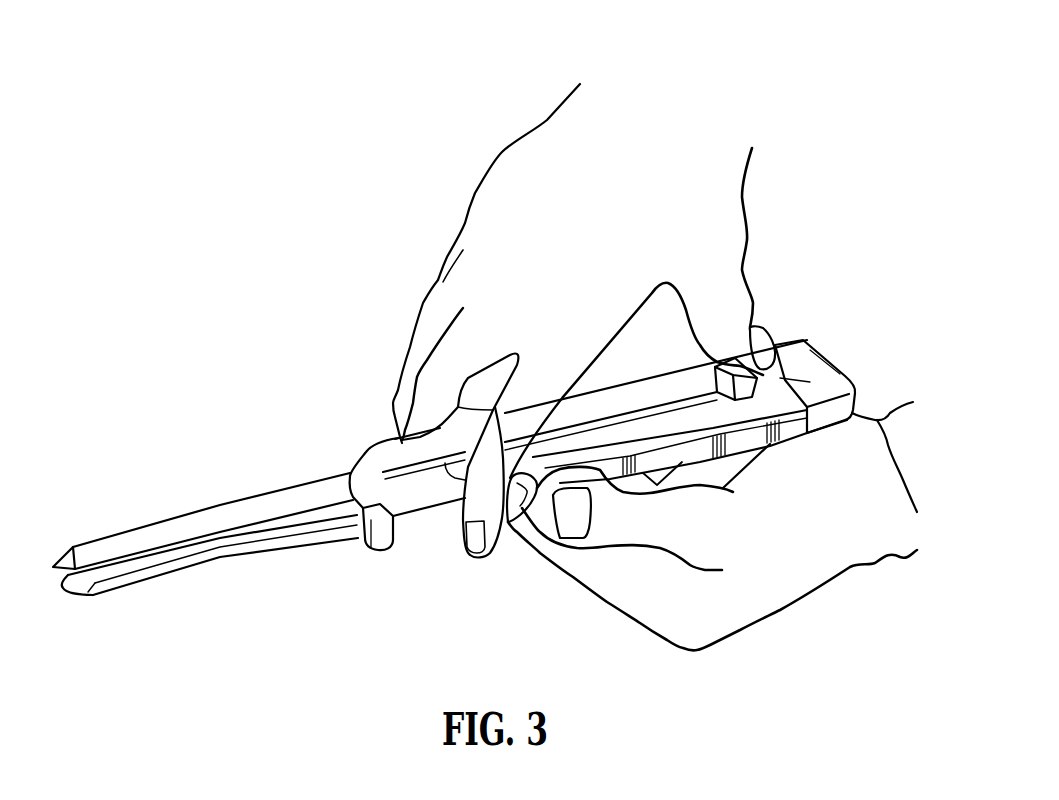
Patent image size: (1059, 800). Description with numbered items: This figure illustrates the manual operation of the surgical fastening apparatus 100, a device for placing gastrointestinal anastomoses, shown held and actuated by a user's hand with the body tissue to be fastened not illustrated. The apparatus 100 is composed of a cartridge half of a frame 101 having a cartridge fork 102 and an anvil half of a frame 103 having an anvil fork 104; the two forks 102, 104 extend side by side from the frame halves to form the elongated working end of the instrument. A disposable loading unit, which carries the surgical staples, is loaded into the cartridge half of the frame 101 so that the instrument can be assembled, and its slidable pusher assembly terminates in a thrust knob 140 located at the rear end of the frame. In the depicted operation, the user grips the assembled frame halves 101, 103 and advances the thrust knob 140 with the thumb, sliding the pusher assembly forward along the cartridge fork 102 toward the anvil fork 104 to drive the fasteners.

The surgical fastening apparatus 100 is at (390, 569).
The cartridge half of a frame 101 is at (793, 348).
The cartridge fork 102 is at (163, 523).
The anvil half of a frame 103 is at (430, 522).
The anvil fork 104 is at (198, 570).
The thrust knob 140 is at (810, 352).